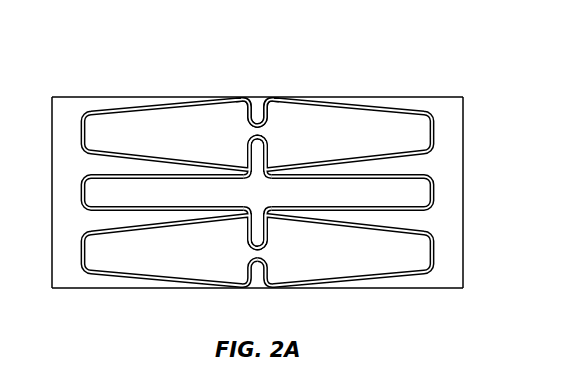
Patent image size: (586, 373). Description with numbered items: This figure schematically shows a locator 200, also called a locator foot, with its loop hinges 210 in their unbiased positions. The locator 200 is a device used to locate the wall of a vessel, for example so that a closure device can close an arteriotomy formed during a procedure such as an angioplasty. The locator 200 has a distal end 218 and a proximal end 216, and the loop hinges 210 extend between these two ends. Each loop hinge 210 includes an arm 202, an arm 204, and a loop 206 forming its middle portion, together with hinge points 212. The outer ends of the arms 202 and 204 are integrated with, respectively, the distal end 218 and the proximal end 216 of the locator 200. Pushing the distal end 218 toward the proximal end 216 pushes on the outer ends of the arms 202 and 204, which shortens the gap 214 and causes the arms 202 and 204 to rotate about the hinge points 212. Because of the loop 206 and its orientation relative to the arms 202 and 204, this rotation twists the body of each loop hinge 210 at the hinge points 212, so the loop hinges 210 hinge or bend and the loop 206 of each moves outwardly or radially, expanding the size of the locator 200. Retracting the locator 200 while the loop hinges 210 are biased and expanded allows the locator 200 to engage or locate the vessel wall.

The locator 200 is at (437, 44).
The arm 202 is at (245, 294).
The arm 204 is at (432, 294).
The loop 206 is at (246, 129).
The loop hinge 210 is at (83, 86).
The hinge point 212 is at (242, 106).
The gap 214 is at (264, 178).
The proximal end 216 is at (463, 294).
The distal end 218 is at (83, 294).